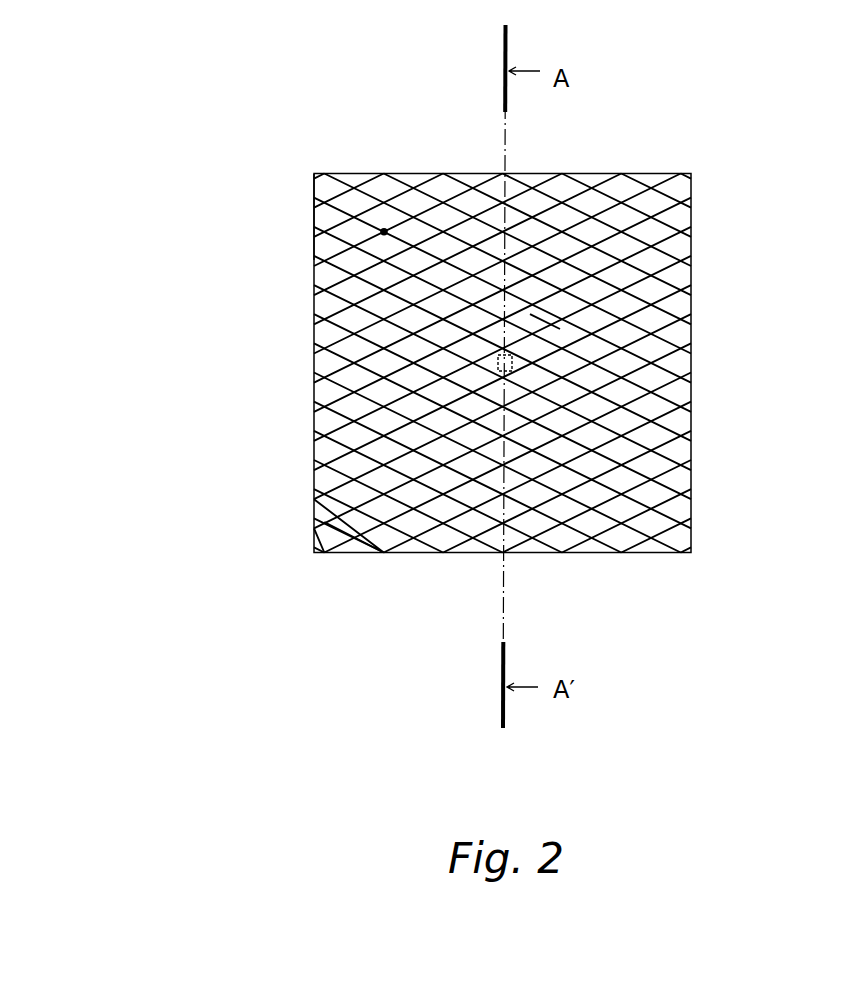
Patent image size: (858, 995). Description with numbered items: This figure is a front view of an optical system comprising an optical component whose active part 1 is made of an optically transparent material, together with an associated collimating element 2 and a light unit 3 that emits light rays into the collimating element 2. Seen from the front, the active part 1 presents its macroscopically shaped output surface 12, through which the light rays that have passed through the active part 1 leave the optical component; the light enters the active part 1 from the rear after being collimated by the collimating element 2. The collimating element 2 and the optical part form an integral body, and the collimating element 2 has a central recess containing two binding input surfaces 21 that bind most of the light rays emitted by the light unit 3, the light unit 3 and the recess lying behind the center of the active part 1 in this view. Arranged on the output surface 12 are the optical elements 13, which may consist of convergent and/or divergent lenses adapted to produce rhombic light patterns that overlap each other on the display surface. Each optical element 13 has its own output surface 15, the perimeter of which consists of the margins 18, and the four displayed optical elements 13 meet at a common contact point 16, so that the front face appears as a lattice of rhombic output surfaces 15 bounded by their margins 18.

The active part 1 is at (703, 548).
The collimating element 2 is at (499, 313).
The light unit 3 is at (521, 368).
The output surface 12 is at (165, 153).
The optical elements 13 is at (502, 363).
The output surface of optical element 15 is at (384, 230).
The common contact point 16 is at (322, 205).
The margins 18 is at (371, 504).
The binding input surfaces 21 is at (552, 322).